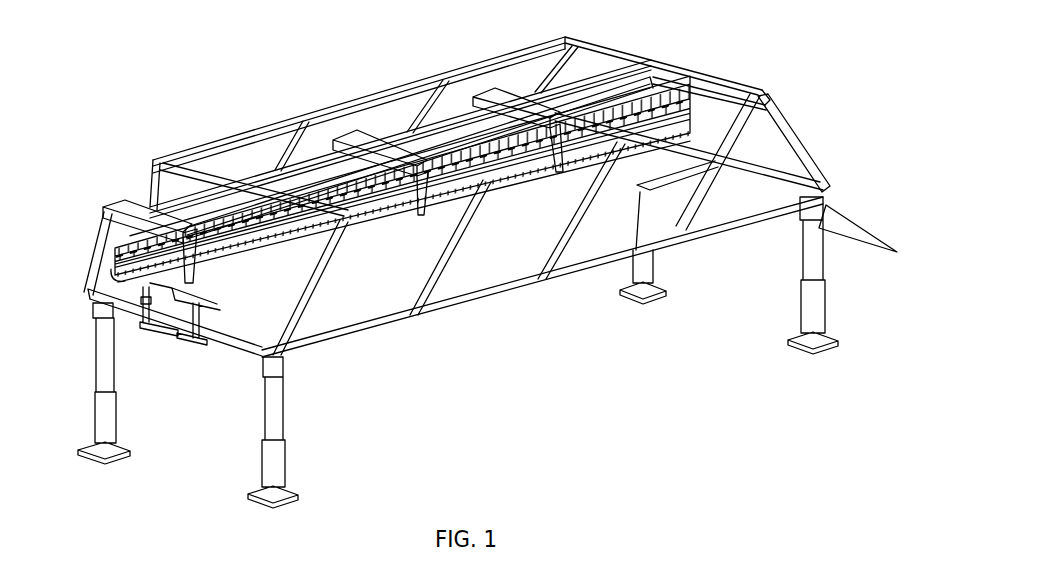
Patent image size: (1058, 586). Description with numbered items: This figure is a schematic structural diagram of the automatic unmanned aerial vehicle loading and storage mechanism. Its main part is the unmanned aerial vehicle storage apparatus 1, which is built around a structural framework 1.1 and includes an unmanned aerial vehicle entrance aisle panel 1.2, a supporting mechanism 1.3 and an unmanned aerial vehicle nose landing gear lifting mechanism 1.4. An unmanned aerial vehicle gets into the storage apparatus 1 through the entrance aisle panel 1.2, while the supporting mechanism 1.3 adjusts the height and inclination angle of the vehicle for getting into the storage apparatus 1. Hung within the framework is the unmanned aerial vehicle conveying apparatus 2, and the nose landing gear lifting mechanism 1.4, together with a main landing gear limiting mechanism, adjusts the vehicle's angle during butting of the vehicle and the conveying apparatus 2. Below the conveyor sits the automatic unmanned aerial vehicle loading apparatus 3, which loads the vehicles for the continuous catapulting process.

The unmanned aerial vehicle storage apparatus 1 is at (507, 259).
The structural framework 1.1 is at (637, 65).
The unmanned aerial vehicle entrance aisle panel 1.2 is at (842, 227).
The supporting mechanism 1.3 is at (813, 300).
The unmanned aerial vehicle nose landing gear lifting mechanism 1.4 is at (667, 180).
The unmanned aerial vehicle conveying apparatus 2 is at (233, 287).
The automatic unmanned aerial vehicle loading apparatus 3 is at (143, 332).